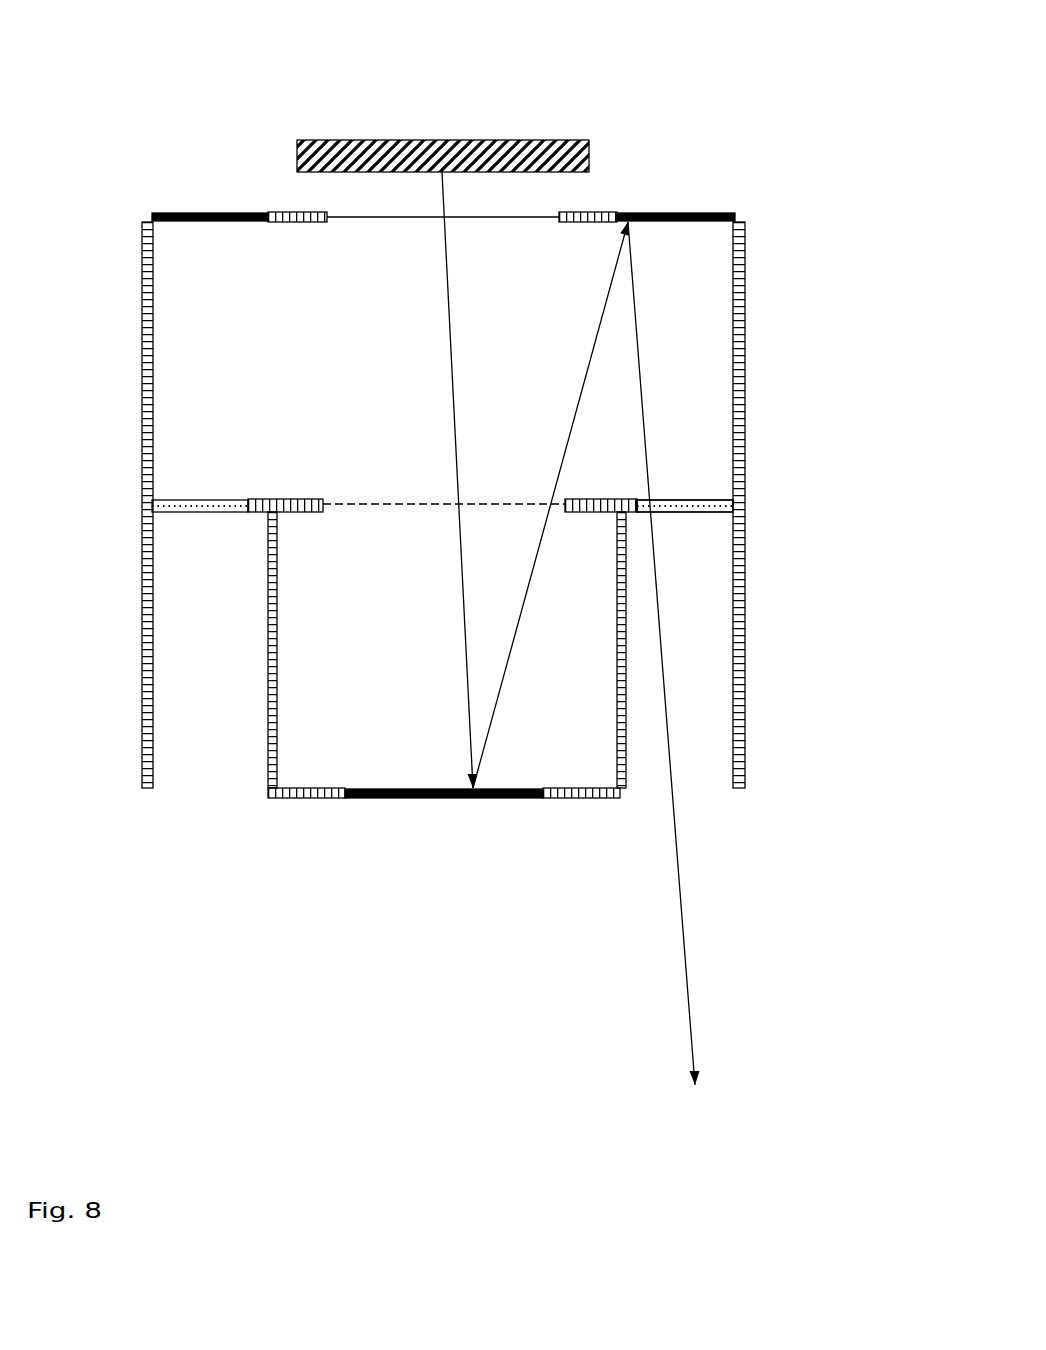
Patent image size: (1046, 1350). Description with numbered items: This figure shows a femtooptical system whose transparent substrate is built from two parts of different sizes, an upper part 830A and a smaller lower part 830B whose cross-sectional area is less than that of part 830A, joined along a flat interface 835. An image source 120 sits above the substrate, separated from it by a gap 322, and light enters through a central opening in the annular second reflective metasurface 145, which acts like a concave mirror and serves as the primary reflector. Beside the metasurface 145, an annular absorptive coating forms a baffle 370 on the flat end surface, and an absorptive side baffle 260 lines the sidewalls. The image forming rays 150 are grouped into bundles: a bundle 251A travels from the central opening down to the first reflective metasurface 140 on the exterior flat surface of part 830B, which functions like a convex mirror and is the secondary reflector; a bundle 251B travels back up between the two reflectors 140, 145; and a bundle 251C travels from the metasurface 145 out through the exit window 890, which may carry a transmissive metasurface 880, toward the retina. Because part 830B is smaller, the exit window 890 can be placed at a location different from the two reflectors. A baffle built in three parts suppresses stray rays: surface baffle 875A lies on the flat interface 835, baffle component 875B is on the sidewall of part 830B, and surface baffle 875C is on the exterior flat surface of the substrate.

The image source 120 is at (417, 138).
The second reflective optical metasurface 145 is at (180, 213).
The baffle 370 is at (302, 223).
The gap 322 is at (598, 190).
The side baffle 260 is at (142, 380).
The first substrate part 830A is at (363, 459).
The second substrate part 830B is at (370, 581).
The flat interface 835 is at (512, 502).
The exit window 890 is at (687, 503).
The transmissive metasurface 880 is at (693, 513).
The surface baffle 875A is at (607, 515).
The baffle component 875B is at (593, 650).
The surface baffle 875C is at (593, 800).
The first reflective optical metasurface 140 is at (430, 800).
The first ray bundle 251A is at (475, 480).
The second ray bundle 251B is at (551, 505).
The third ray bundle 251C is at (663, 653).
The image forming rays 150 is at (661, 1044).